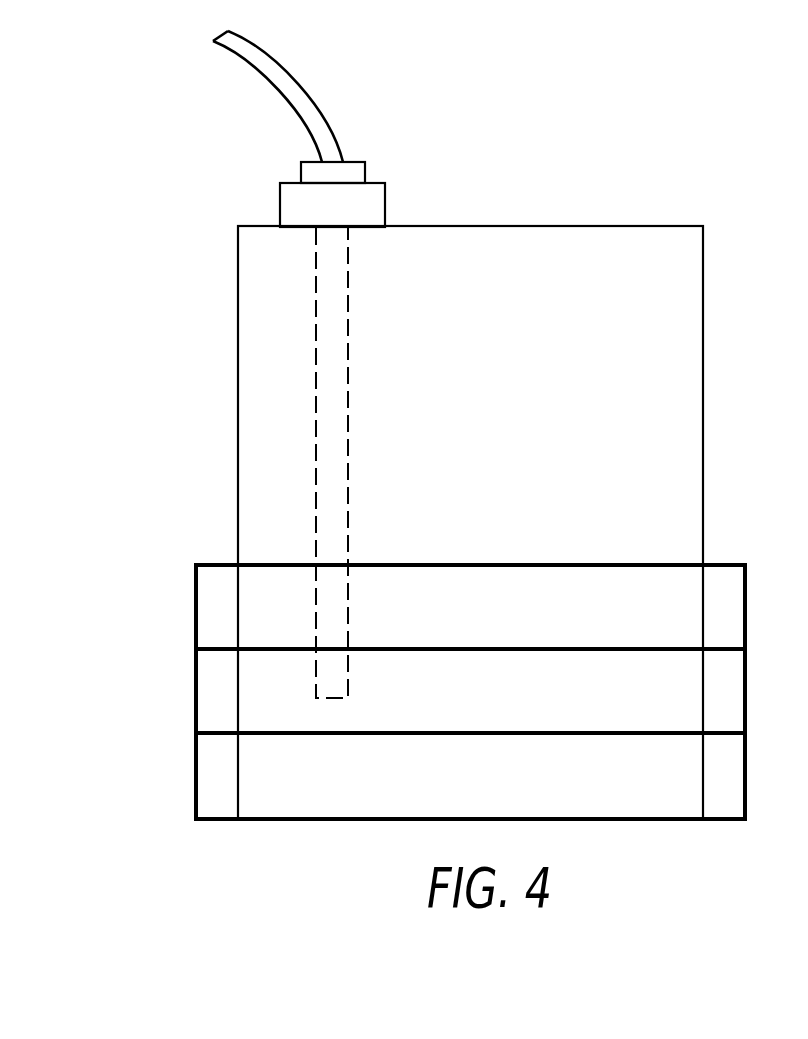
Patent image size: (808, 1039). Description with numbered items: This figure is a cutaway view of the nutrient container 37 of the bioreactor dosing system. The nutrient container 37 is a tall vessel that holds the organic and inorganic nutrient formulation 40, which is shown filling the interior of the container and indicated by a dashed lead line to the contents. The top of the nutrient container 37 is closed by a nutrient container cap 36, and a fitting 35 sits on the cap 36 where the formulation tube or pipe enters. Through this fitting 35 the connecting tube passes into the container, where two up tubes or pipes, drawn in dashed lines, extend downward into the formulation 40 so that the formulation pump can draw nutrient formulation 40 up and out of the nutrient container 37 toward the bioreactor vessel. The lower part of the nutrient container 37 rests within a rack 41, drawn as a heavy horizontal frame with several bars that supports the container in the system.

The fitting 35 is at (300, 171).
The nutrient container cap 36 is at (280, 212).
The nutrient container 37 is at (238, 348).
The organic and inorganic nutrient formulation 40 is at (670, 443).
The rack 41 is at (186, 758).